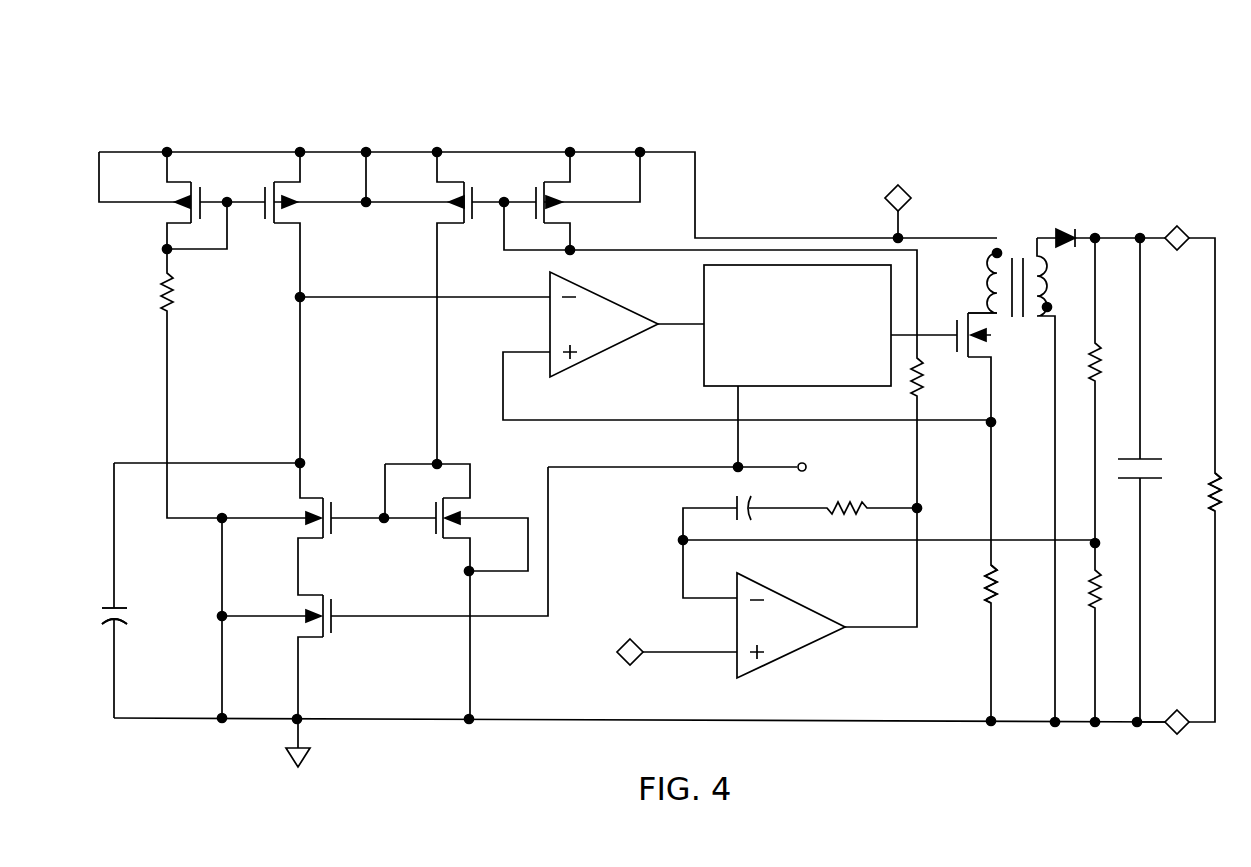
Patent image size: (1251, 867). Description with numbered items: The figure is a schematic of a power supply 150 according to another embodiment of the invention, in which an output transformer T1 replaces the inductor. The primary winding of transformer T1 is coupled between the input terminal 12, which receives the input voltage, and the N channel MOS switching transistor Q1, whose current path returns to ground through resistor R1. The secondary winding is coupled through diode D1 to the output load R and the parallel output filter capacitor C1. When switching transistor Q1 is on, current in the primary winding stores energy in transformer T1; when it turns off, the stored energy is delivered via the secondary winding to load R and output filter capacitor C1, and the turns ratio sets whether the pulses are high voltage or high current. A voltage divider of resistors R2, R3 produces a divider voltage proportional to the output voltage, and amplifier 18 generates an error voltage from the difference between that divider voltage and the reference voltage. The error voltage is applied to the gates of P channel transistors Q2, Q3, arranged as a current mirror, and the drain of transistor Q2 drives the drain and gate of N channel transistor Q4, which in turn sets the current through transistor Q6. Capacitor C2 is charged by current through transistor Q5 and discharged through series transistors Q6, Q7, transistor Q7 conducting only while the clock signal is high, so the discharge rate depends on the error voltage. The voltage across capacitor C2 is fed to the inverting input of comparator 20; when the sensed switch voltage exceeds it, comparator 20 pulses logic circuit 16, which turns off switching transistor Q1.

The switching regulator circuit 150 is at (702, 122).
The input terminal 12 is at (880, 189).
The comparator 20 is at (599, 297).
The logic circuit 16 is at (838, 388).
The amplifier 18 is at (813, 639).
The switching transistor Q1 is at (994, 337).
The transistor Q2 is at (448, 182).
The transistor Q3 is at (546, 175).
The transistor Q4 is at (445, 543).
The transistor Q5 is at (303, 220).
The transistor Q6 is at (317, 497).
The transistor Q7 is at (336, 628).
The transformer T1 is at (1005, 240).
The diode D1 is at (1062, 227).
The resistor R1 is at (997, 592).
The resistor R2 is at (1100, 372).
The resistor R3 is at (1094, 578).
The load R is at (1225, 492).
The output filter capacitor C1 is at (1140, 458).
The capacitor C2 is at (101, 609).